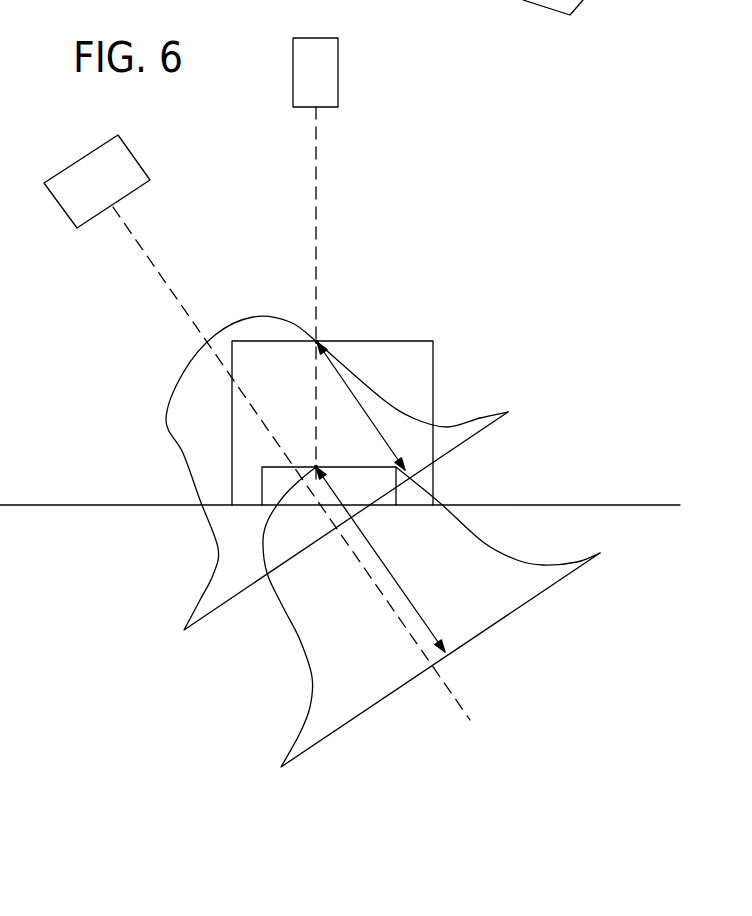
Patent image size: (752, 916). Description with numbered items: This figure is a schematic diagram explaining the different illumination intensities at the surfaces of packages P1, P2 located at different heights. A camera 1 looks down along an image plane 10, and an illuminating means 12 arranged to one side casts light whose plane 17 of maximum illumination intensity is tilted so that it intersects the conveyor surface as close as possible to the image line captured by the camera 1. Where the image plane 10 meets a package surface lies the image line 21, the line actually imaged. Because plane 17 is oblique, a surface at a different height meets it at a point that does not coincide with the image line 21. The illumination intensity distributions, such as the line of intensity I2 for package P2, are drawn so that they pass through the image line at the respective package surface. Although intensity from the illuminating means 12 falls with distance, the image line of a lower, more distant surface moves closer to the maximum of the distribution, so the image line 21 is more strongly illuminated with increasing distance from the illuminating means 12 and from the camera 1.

The camera 1 is at (323, 80).
The image plane 10 is at (343, 249).
The illuminating means 12 is at (122, 165).
The plane of maximum illumination intensity 17 is at (177, 293).
The image line 21 is at (318, 340).
The package P1 is at (425, 367).
The package P2 is at (262, 467).
The line of intensity I2 is at (407, 592).